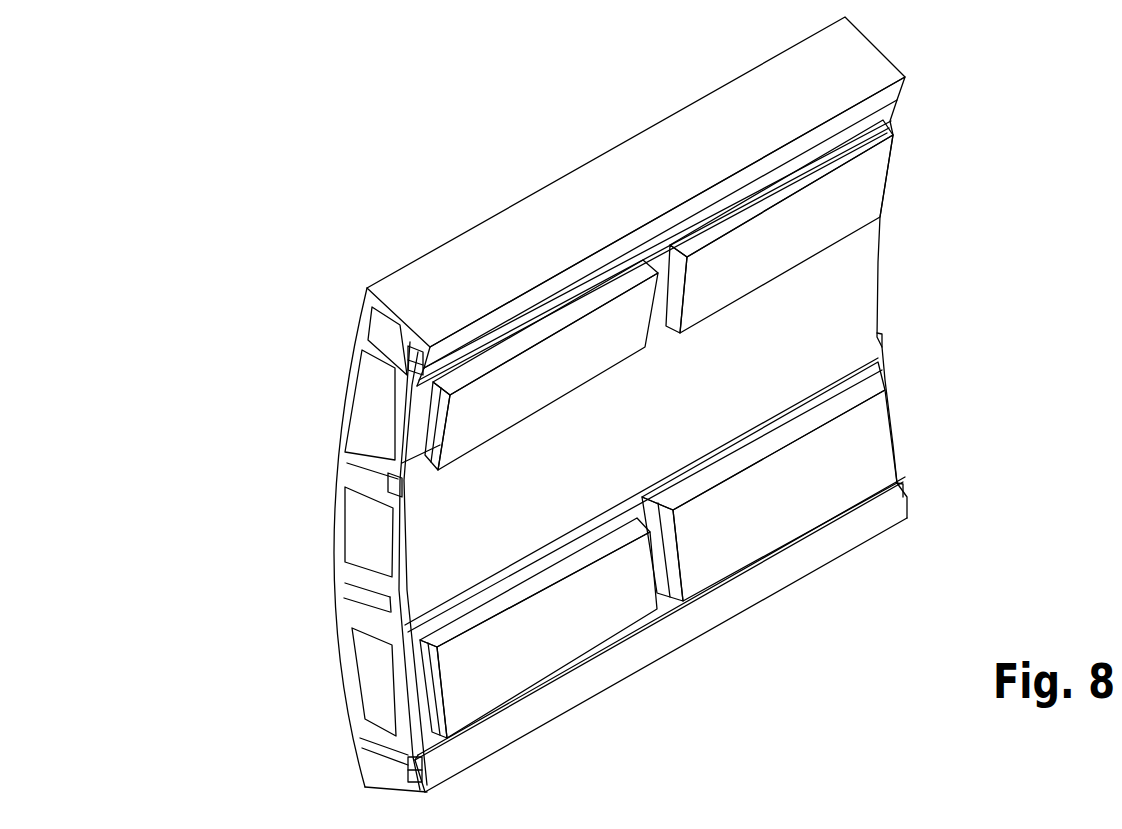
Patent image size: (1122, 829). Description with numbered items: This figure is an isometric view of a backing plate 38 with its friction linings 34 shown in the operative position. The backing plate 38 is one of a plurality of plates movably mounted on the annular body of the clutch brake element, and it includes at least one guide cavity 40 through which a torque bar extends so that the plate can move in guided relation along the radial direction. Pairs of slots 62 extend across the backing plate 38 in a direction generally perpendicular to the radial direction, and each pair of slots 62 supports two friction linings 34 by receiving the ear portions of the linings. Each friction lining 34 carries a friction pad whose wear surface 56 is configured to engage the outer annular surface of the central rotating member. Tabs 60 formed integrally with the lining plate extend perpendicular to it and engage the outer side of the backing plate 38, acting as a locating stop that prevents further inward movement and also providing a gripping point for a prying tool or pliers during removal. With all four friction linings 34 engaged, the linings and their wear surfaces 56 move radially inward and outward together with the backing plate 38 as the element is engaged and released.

The friction lining 34 is at (890, 122).
The backing plate 38 is at (645, 128).
The guide cavity 40 is at (362, 512).
The wear surface 56 is at (560, 372).
The tab 60 is at (410, 333).
The slot 62 is at (363, 607).